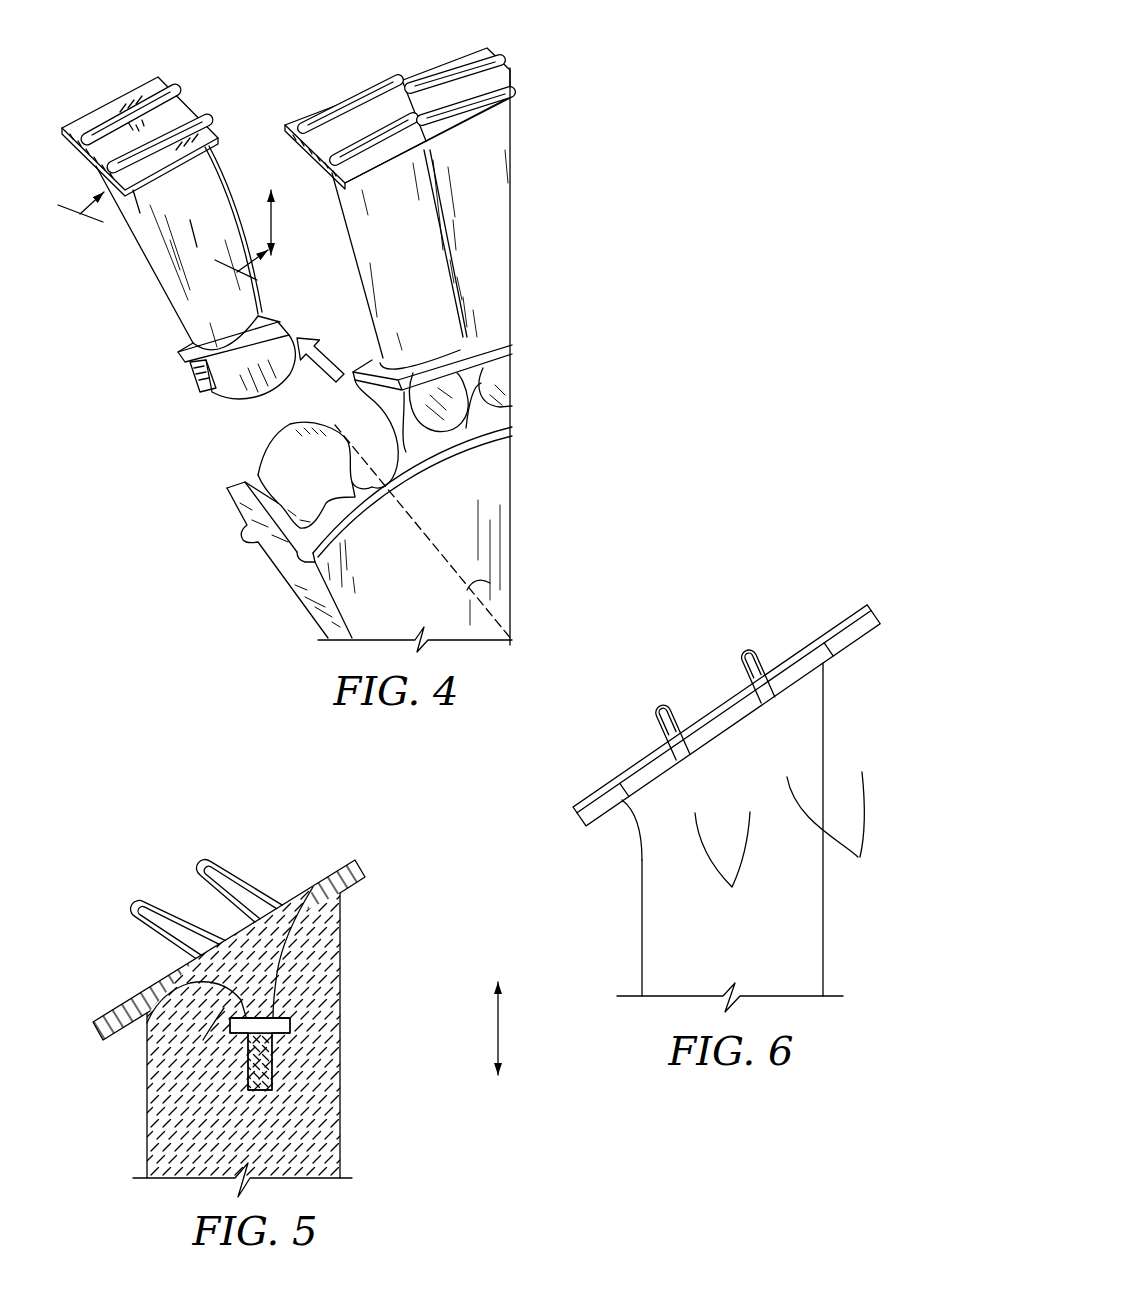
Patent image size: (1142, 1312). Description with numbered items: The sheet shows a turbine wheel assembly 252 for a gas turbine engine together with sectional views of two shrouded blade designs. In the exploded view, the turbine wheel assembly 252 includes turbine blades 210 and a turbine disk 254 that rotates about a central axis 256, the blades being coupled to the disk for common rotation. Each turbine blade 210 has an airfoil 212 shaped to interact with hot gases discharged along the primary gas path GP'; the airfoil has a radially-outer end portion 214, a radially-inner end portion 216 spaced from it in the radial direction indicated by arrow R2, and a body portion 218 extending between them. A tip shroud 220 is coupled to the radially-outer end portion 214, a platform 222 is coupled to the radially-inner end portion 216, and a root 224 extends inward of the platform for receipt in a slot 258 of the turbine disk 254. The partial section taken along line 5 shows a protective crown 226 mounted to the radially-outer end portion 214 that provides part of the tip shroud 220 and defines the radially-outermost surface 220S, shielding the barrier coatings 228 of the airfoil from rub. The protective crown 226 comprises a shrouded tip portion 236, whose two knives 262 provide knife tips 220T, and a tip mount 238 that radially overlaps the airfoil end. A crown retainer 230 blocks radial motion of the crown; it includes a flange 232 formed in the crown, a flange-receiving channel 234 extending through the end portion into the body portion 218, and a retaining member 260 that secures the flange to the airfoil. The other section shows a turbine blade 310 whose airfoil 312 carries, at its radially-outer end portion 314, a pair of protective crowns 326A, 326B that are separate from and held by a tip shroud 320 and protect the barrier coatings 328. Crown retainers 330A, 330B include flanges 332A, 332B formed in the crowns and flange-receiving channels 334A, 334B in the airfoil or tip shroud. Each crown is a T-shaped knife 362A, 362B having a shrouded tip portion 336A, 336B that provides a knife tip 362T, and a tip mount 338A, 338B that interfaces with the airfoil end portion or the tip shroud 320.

In FIG. 4, the turbine blade 210 is at (125, 98).
In FIG. 5, the turbine blade 210 is at (243, 828).
In FIG. 4, the airfoil 212 is at (170, 248).
In FIG. 5, the airfoil 212 is at (182, 1132).
In FIG. 4, the radially-outer end portion 214 is at (191, 168).
In FIG. 5, the radially-outer end portion 214 is at (313, 950).
In FIG. 4, the radially-inner end portion 216 is at (242, 318).
In FIG. 4, the body portion 218 is at (200, 266).
In FIG. 5, the body portion 218 is at (312, 1096).
In FIG. 4, the tip shroud 220 is at (172, 92).
In FIG. 5, the tip shroud 220 is at (163, 948).
In FIG. 5, the knife tips 220T is at (120, 903).
In FIG. 5, the radially-outermost surface 220S is at (213, 933).
In FIG. 4, the platform 222 is at (203, 358).
In FIG. 4, the root 224 is at (222, 384).
In FIG. 5, the protective crown 226 is at (302, 890).
In FIG. 5, the barrier coatings 228 is at (148, 1022).
In FIG. 5, the crown retainer 230 is at (397, 982).
In FIG. 5, the flange 232 is at (249, 1000).
In FIG. 5, the flange-receiving channel 234 is at (278, 1062).
In FIG. 5, the shrouded tip portion 236 is at (282, 896).
In FIG. 5, the tip mount 238 is at (205, 1037).
In FIG. 4, the turbine wheel assembly 252 is at (470, 36).
In FIG. 4, the turbine disk 254 is at (483, 478).
In FIG. 4, the central axis 256 is at (492, 583).
In FIG. 4, the slot 258 is at (272, 474).
In FIG. 5, the retaining member 260 is at (270, 1025).
In FIG. 5, the knives 262 is at (229, 857).
In FIG. 6, the turbine blade 310 is at (766, 592).
In FIG. 6, the airfoil 312 is at (688, 933).
In FIG. 6, the radially-outer end portion 314 is at (832, 666).
In FIG. 6, the tip shroud 320 is at (853, 634).
In FIG. 6, the protective crown 326A is at (552, 735).
In FIG. 6, the protective crown 326B is at (857, 597).
In FIG. 6, the barrier coatings 328 is at (641, 858).
In FIG. 6, the crown retainer 330A is at (730, 865).
In FIG. 6, the crown retainer 330B is at (841, 832).
In FIG. 6, the flange 332A is at (683, 753).
In FIG. 6, the flange 332B is at (773, 700).
In FIG. 6, the flange-receiving channel 334A is at (707, 745).
In FIG. 6, the flange-receiving channel 334B is at (827, 663).
In FIG. 6, the shrouded tip portion 336A is at (650, 717).
In FIG. 6, the shrouded tip portion 336B is at (767, 677).
In FIG. 6, the tip mount 338A is at (637, 760).
In FIG. 6, the tip mount 338B is at (862, 615).
In FIG. 6, the T-shaped knife 362A is at (676, 722).
In FIG. 6, the T-shaped knife 362B is at (744, 668).
In FIG. 6, the knife tip 362T is at (729, 641).
In FIG. 4, the radial direction arrow R2 is at (273, 216).
In FIG. 5, the radial direction arrow R2 is at (500, 1026).
In FIG. 4, the primary gas path GP' is at (315, 378).
In FIG. 4, the section line 5- 5 is at (152, 248).